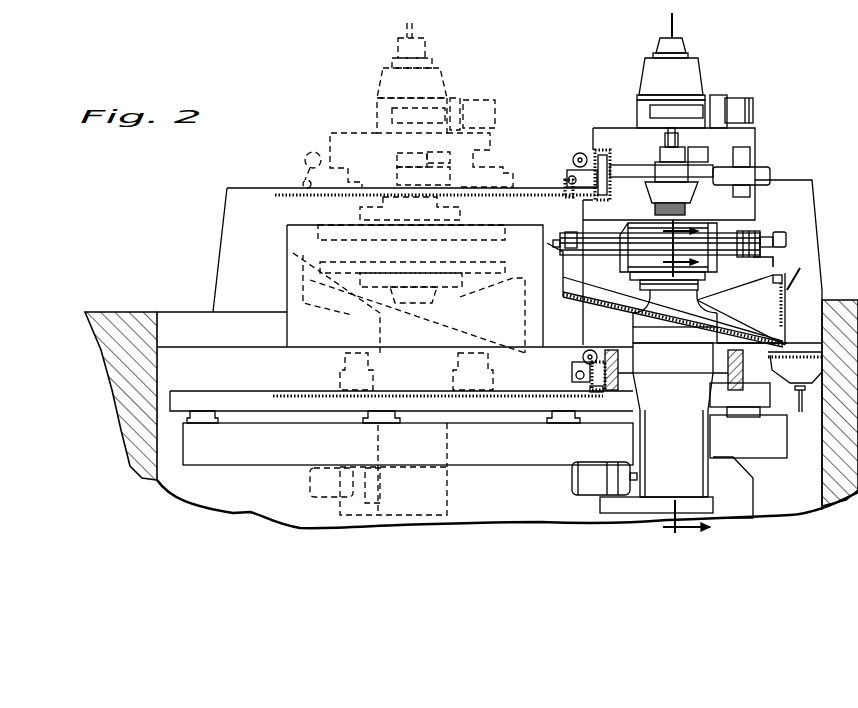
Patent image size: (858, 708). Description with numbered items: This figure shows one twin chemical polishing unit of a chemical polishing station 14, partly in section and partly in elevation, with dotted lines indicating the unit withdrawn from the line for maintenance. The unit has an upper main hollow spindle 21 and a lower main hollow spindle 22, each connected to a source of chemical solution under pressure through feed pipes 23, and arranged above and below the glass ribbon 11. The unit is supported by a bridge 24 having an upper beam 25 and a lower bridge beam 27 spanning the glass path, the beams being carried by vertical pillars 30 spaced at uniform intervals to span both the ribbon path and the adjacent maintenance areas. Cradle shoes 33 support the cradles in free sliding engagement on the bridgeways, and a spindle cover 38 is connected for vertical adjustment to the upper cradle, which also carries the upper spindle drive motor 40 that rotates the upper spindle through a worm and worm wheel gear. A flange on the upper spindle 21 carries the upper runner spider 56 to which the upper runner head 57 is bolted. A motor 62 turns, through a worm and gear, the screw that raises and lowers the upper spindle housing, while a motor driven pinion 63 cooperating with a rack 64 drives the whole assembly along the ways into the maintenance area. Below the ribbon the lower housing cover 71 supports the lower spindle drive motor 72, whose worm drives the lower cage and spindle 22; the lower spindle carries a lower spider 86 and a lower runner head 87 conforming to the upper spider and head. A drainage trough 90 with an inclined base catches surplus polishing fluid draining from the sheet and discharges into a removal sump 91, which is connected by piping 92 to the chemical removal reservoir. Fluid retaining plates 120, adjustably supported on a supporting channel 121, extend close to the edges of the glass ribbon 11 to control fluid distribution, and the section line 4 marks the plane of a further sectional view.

The section line 4- 4 is at (695, 368).
The glass ribbon 11 is at (633, 246).
The chemical polishing station 14 is at (791, 122).
The upper main hollow spindle 21 is at (655, 220).
The lower main hollow spindle 22 is at (650, 284).
The feed pipes 23 is at (674, 30).
The bridge 24 is at (231, 252).
The upper beam 25 is at (807, 204).
The lower bridge beam 27 is at (480, 456).
The vertical pillars 30 is at (233, 490).
The cradle shoes 33 is at (773, 174).
The spindle cover 38 is at (693, 67).
The upper spindle drive motor 40 is at (752, 98).
The upper runner spider 56 is at (717, 218).
The upper runner head 57 is at (306, 229).
The motor 62 is at (703, 151).
The motor driven pinion 63 is at (562, 198).
The rack 64 is at (548, 191).
The cover 71 is at (712, 496).
The lower spindle drive motor 72 is at (575, 483).
The lower spider 86 is at (708, 272).
The lower runner head 87 is at (503, 263).
The drainage trough 90 is at (350, 316).
The removal sump 91 is at (793, 370).
The piping 92 is at (801, 413).
The plate 120 is at (588, 246).
The supporting channel 121 is at (572, 231).